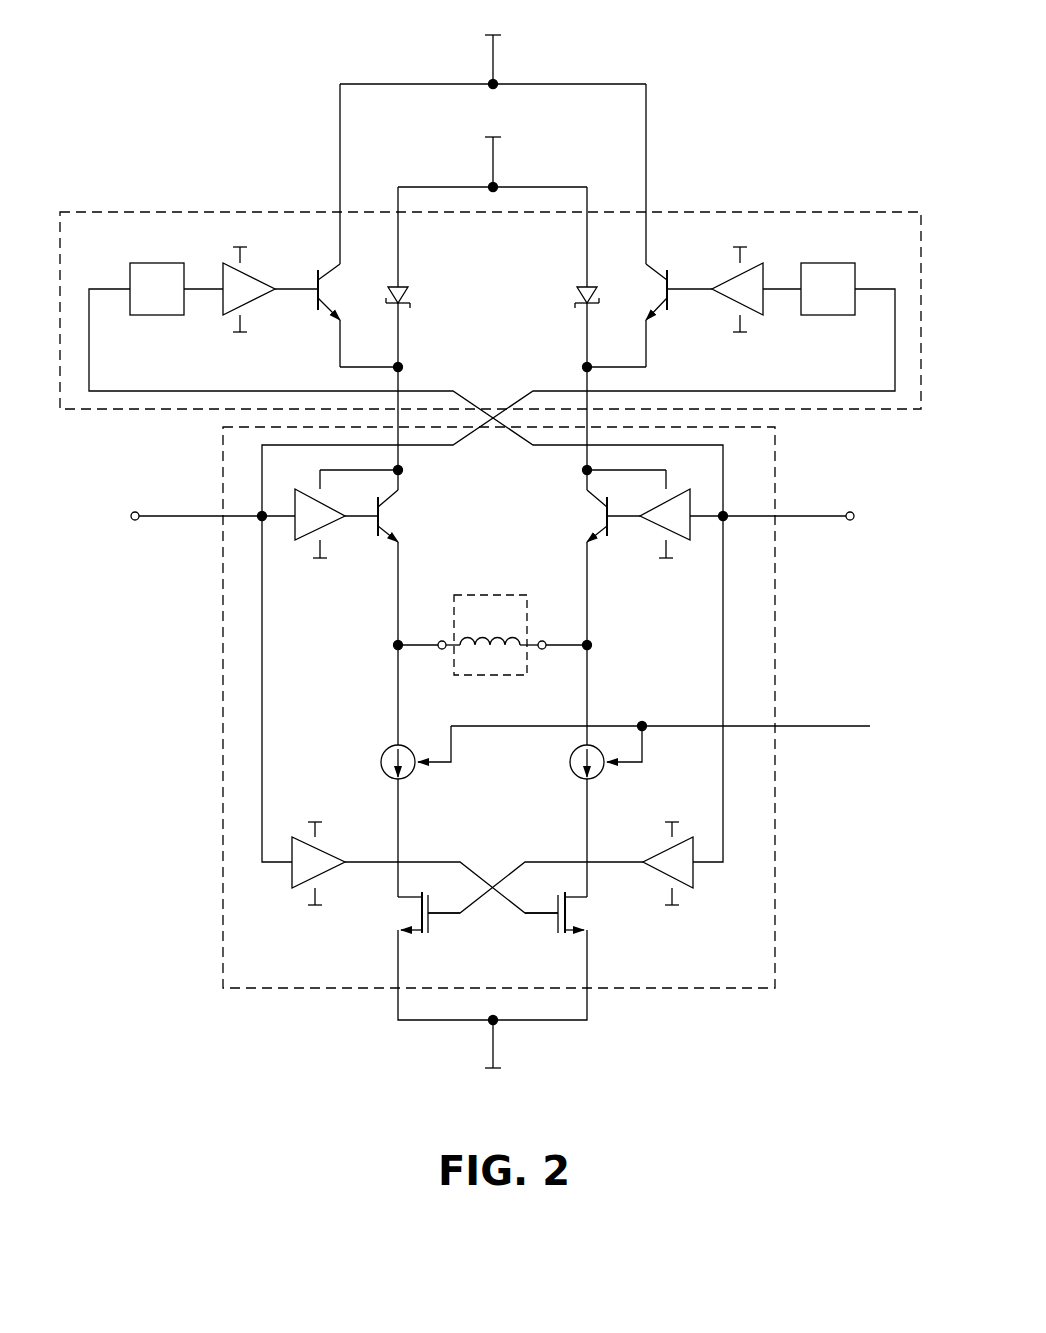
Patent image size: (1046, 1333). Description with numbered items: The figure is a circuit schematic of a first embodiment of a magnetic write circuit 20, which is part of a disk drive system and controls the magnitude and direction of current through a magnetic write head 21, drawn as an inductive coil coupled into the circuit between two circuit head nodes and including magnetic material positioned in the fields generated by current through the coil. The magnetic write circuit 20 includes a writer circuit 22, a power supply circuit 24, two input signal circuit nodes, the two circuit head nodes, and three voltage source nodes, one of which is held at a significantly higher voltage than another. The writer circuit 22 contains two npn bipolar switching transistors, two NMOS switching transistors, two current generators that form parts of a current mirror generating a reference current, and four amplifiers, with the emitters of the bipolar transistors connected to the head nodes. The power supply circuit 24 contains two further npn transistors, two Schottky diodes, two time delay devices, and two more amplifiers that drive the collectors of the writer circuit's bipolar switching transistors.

The magnetic write circuit 20 is at (206, 124).
The magnetic write head 21 is at (500, 595).
The writer circuit 22 is at (222, 712).
The power supply circuit 24 is at (825, 212).